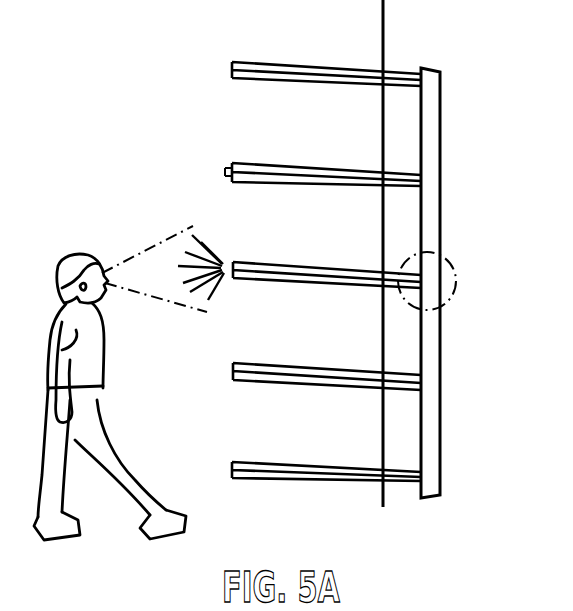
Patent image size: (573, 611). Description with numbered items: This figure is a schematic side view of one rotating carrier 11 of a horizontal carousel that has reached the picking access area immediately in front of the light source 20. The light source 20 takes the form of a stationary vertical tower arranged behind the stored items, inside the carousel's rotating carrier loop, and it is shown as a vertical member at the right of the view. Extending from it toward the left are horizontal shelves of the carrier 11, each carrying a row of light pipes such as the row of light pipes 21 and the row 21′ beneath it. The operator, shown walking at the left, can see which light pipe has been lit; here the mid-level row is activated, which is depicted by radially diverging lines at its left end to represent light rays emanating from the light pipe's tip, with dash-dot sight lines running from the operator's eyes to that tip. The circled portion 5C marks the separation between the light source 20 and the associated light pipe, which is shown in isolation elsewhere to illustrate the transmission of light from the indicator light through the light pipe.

The carrier 11 is at (230, 172).
The light source 20 is at (441, 284).
The light pipe row 21 is at (318, 62).
The light pipe row 21′ is at (317, 165).
The circled portion for FIG. 5C is at (458, 280).